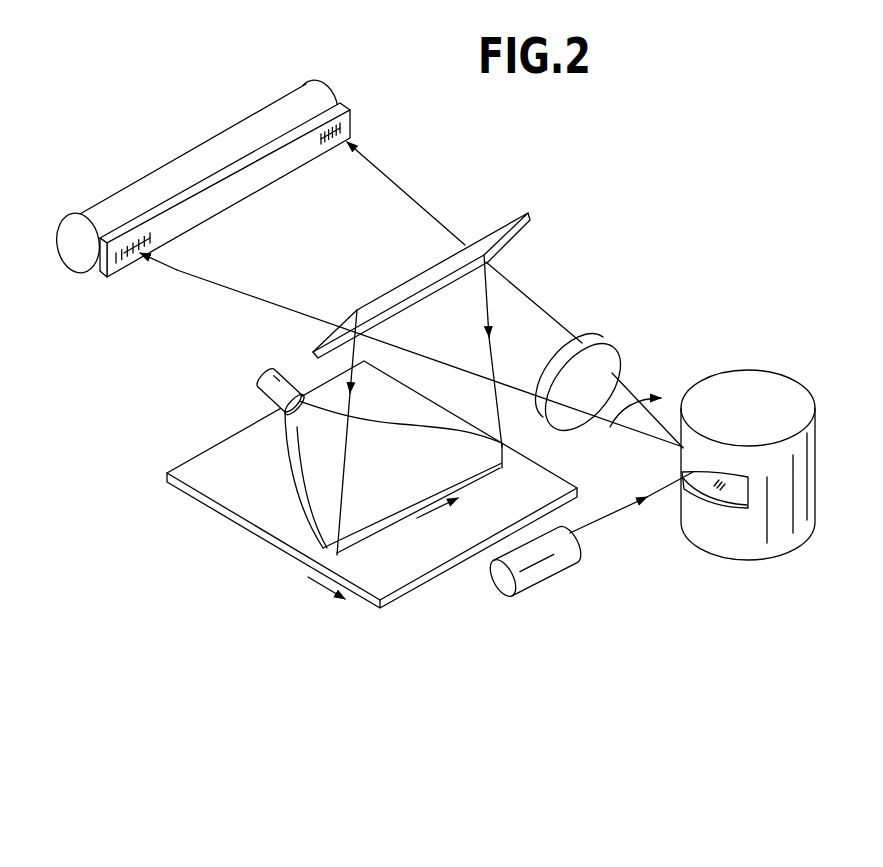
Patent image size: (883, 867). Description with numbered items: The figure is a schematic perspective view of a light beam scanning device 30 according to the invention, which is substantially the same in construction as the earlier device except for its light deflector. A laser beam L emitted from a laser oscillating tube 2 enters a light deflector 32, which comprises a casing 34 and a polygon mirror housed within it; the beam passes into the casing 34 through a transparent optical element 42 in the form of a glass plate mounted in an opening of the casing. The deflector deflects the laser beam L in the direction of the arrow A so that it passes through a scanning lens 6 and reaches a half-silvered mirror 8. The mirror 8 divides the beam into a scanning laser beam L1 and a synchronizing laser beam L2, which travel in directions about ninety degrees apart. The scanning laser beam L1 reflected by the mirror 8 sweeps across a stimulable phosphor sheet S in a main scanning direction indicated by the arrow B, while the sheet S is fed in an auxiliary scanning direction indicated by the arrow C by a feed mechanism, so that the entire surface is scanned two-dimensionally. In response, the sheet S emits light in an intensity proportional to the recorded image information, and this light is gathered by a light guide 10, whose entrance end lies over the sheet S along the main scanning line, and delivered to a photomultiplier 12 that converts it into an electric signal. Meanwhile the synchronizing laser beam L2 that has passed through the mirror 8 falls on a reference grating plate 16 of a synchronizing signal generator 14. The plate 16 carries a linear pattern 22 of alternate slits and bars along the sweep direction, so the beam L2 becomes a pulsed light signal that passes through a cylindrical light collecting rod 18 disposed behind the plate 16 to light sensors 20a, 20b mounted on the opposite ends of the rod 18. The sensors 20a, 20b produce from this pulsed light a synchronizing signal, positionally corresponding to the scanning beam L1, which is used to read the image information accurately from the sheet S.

The laser oscillating tube 2 is at (537, 575).
The scanning lens 6 is at (608, 360).
The half-silvered mirror 8 is at (500, 247).
The light guide 10 is at (293, 472).
The photomultiplier 12 is at (273, 375).
The synchronizing signal generator 14 is at (225, 191).
The reference grating plate 16 is at (250, 195).
The cylindrical light collecting rod 18 is at (225, 191).
The light sensor 20a is at (83, 252).
The light sensor 20b is at (322, 91).
The linear pattern of alternate slits and bars 22 is at (150, 237).
The light beam scanning device 30 is at (484, 304).
The light deflector 32 is at (768, 446).
The casing 34 is at (797, 507).
The transparent optical element 42 is at (712, 490).
The stimulable phosphor sheet S is at (198, 482).
The laser beam L is at (627, 503).
The scanning laser beam L1 is at (482, 310).
The synchronizing laser beam L2 is at (443, 227).
The direction of deflection A is at (646, 409).
The main scanning direction B is at (437, 516).
The auxiliary scanning direction C is at (326, 597).